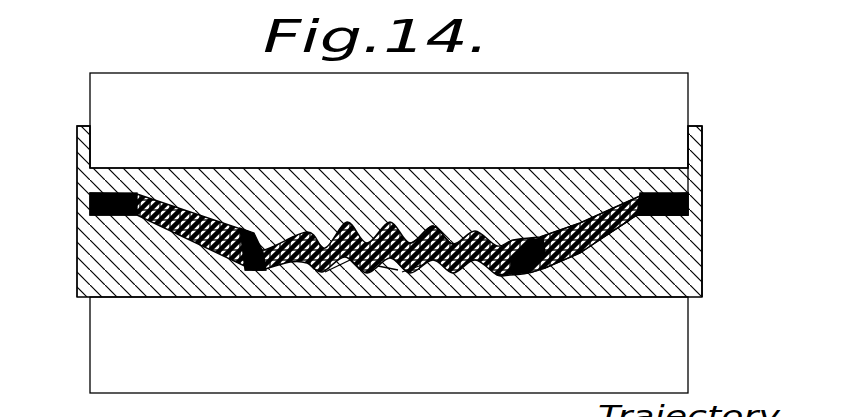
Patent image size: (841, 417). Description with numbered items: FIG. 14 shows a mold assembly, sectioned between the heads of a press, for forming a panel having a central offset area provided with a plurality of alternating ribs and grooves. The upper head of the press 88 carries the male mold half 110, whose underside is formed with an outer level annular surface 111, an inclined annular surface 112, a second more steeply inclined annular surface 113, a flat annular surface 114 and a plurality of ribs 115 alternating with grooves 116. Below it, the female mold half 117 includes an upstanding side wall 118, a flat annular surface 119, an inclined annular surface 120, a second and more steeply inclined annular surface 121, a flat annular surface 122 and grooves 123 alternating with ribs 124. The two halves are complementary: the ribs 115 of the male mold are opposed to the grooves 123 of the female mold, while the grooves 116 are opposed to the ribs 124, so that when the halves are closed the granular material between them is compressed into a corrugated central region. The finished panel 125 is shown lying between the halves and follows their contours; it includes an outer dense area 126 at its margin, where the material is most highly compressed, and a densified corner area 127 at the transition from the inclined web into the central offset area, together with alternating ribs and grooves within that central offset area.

The upper head of the press 88 is at (591, 73).
The male mold half 110 is at (400, 168).
The outer level annular surface 111 is at (658, 195).
The inclined annular surface 112 is at (576, 214).
The second more steeply inclined annular surface 113 is at (537, 240).
The flat annular surface 114 is at (260, 247).
The ribs 115 is at (330, 228).
The grooves 116 is at (433, 227).
The female mold half 117 is at (704, 244).
The upstanding side wall 118 is at (703, 140).
The flat annular surface 119 is at (668, 227).
The inclined annular surface 120 is at (619, 226).
The second more steeply inclined annular surface 121 is at (541, 258).
The flat annular surface 122 is at (512, 275).
The grooves 123 is at (340, 274).
The ribs 124 is at (388, 270).
The finished panel 125 is at (413, 272).
The outer dense area 126 is at (116, 198).
The densified corner area 127 is at (258, 270).